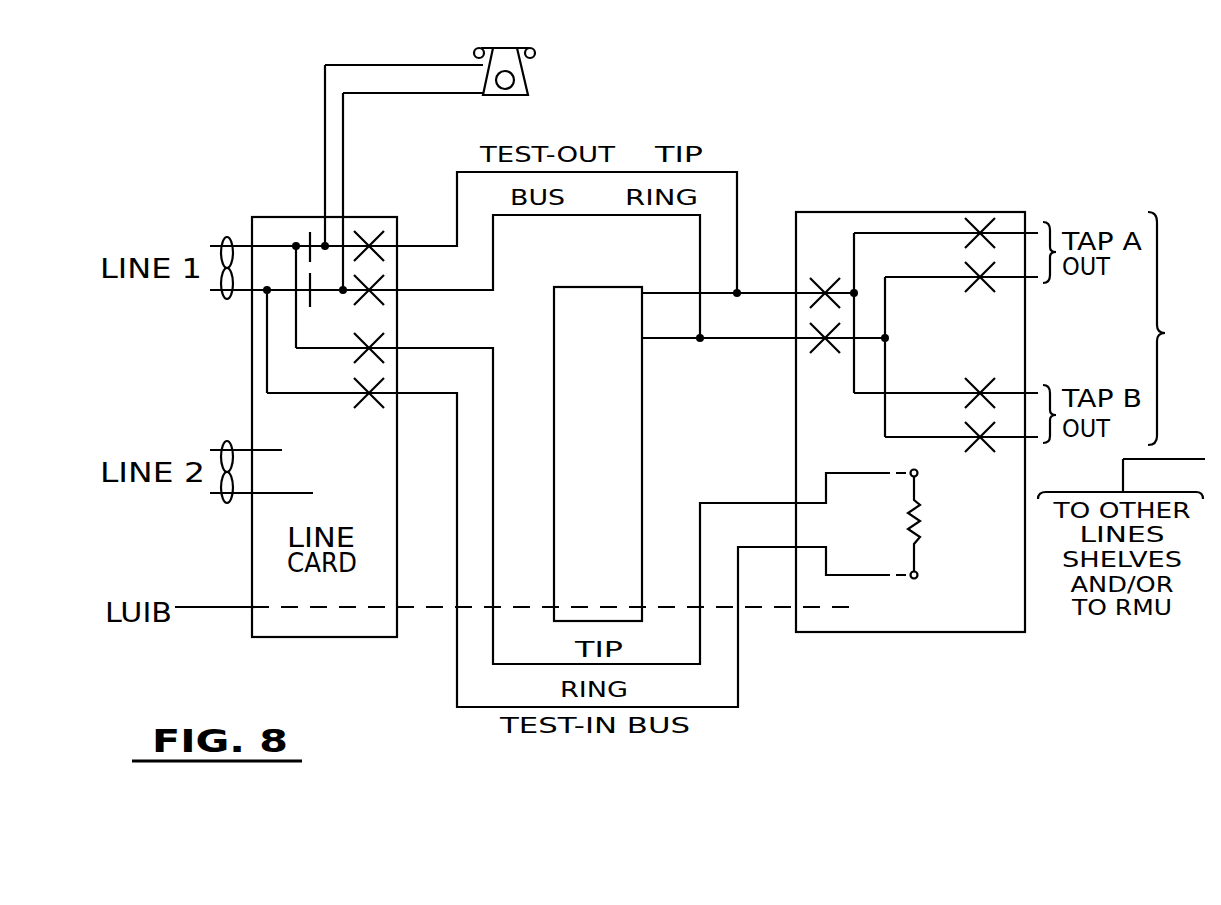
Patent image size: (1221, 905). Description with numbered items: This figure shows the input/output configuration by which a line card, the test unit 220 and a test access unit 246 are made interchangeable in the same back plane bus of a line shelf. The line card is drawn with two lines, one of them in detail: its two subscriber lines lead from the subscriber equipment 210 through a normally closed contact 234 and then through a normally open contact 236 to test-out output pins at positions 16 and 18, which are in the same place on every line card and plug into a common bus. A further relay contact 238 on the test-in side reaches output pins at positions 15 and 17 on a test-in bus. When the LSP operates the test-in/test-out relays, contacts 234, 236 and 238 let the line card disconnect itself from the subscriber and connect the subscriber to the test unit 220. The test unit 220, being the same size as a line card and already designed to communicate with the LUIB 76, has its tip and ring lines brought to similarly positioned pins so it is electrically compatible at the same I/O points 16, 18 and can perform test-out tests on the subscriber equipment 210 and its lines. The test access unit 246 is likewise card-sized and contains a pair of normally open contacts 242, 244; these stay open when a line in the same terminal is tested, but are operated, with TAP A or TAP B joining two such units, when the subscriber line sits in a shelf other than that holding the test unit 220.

The subscriber equipment 210 is at (522, 73).
The normally closed contact 234 is at (300, 225).
The normally open contact 236 is at (357, 222).
The relay contact 238 is at (348, 408).
The test unit 220 is at (613, 287).
The normally open contact 242 is at (951, 215).
The normally open contact 244 is at (972, 373).
The test access unit 246 is at (870, 632).
The LUIB 76 is at (208, 609).
The test-out output pin position 16 is at (717, 282).
The test-out output pin position 18 is at (717, 326).
The test-in tip lead 15 is at (654, 493).
The test-in ring lead 17 is at (654, 537).